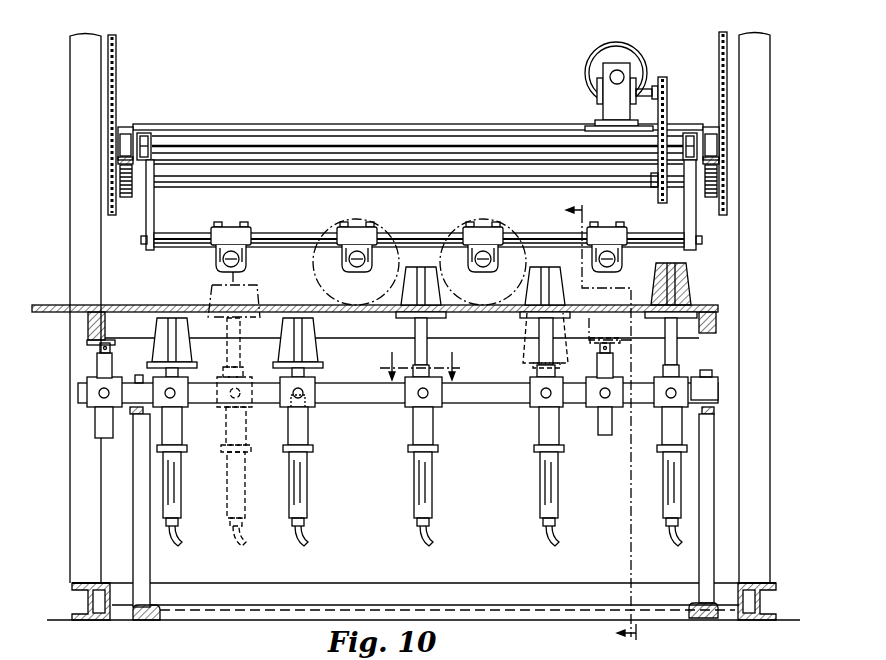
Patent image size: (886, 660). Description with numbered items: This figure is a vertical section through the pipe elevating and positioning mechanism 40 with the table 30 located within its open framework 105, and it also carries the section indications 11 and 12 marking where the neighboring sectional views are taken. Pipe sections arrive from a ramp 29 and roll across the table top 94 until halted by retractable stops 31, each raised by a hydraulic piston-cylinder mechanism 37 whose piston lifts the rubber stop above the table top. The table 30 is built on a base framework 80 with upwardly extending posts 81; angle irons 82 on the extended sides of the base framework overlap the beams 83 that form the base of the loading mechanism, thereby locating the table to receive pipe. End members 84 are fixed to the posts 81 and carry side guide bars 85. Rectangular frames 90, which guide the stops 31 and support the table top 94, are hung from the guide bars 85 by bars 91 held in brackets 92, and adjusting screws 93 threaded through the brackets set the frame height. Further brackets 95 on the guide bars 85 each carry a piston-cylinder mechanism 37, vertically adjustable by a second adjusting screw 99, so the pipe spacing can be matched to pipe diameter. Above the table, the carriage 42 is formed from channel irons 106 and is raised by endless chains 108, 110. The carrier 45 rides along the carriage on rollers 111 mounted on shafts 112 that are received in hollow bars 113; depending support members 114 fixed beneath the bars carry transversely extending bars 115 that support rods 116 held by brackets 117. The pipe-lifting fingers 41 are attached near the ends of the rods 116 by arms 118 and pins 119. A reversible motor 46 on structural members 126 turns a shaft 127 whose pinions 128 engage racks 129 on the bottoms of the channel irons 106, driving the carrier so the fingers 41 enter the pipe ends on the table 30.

The pipe elevating and positioning mechanism 40 is at (421, 307).
The open framework 105 is at (70, 133).
The endless chain 110 is at (118, 82).
The endless chain 108 is at (720, 60).
The channel iron 106 is at (125, 127).
The roller 111 is at (421, 141).
The hollow bar 113 is at (158, 152).
The shaft 112 is at (277, 143).
The carriage 42 is at (378, 125).
The structural member 126 is at (512, 125).
The shaft 127 is at (355, 178).
The motor 46 is at (586, 70).
The rack 129 is at (115, 162).
The pinion 128 is at (128, 203).
The depending support member 114 is at (154, 205).
The transversely extending bar 115 is at (419, 222).
The carrier 45 is at (302, 238).
The pipe-lifting finger 41 is at (412, 267).
The bracket 117 is at (240, 226).
The arm 118 is at (218, 255).
The rod 116 is at (252, 275).
The pin 119 is at (220, 277).
The ramp 29 is at (374, 306).
The table 30 is at (127, 305).
The table top 94 is at (127, 310).
The rectangular frame 90 is at (372, 328).
The retractable stop 31 is at (410, 263).
The side guide bar 85 is at (80, 395).
The bracket 92 is at (342, 411).
The bar 91 is at (95, 438).
The adjusting screw 93 is at (105, 393).
The bracket 95 is at (188, 396).
The second adjusting screw 99 is at (293, 400).
The hydraulic piston-cylinder mechanism 37 is at (182, 497).
The end member 84 is at (130, 418).
The post 81 is at (152, 567).
The angle iron 82 is at (88, 582).
The beam 83 is at (424, 580).
The base framework 80 is at (362, 603).
The section line 11- 11 is at (618, 422).
The section line 12- 12 is at (423, 366).